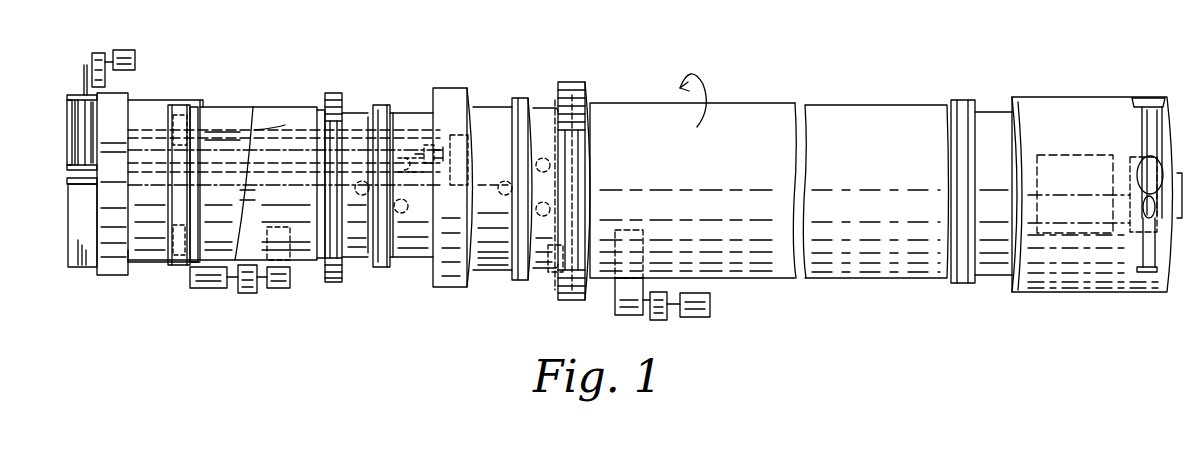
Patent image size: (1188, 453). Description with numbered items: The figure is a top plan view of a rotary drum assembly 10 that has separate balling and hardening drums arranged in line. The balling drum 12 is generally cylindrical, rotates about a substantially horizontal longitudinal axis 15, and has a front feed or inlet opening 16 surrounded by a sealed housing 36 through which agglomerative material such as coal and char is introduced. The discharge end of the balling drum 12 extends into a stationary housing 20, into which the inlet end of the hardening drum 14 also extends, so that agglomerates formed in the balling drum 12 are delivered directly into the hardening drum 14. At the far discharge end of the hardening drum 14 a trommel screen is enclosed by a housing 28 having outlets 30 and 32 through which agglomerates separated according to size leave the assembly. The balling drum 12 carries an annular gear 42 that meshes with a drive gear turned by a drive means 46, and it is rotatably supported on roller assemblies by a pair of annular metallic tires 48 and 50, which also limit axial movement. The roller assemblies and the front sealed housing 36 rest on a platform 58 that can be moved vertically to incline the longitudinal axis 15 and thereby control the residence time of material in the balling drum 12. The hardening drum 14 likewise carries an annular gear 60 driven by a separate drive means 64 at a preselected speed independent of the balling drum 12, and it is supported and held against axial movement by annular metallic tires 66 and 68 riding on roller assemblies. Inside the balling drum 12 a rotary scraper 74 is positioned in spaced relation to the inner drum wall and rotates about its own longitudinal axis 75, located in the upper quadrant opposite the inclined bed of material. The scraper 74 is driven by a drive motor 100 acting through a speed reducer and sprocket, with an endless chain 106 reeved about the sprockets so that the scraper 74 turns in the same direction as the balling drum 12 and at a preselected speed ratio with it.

The rotary drum assembly 10 is at (612, 90).
The balling drum 12 is at (233, 107).
The hardening drum 14 is at (779, 103).
The longitudinal axis 15 is at (215, 187).
The inlet opening 16 is at (127, 248).
The stationary housing 20 is at (450, 88).
The housing 28 is at (1110, 97).
The outlet 30 is at (1060, 155).
The outlet 32 is at (1135, 234).
The sealed housing 36 is at (103, 222).
The annular gear 42 is at (338, 92).
The drive means 46 is at (280, 288).
The annular metallic tire 48 is at (379, 268).
The annular metallic tire 50 is at (177, 266).
The platform 58 is at (83, 268).
The annular gear 60 is at (567, 300).
The drive means 64 is at (623, 313).
The annular metallic tire 66 is at (518, 98).
The annular metallic tire 68 is at (963, 100).
The rotary scraper 74 is at (298, 177).
The longitudinal axis 75 is at (272, 131).
The drive motor 100 is at (135, 60).
The endless chain 106 is at (84, 88).